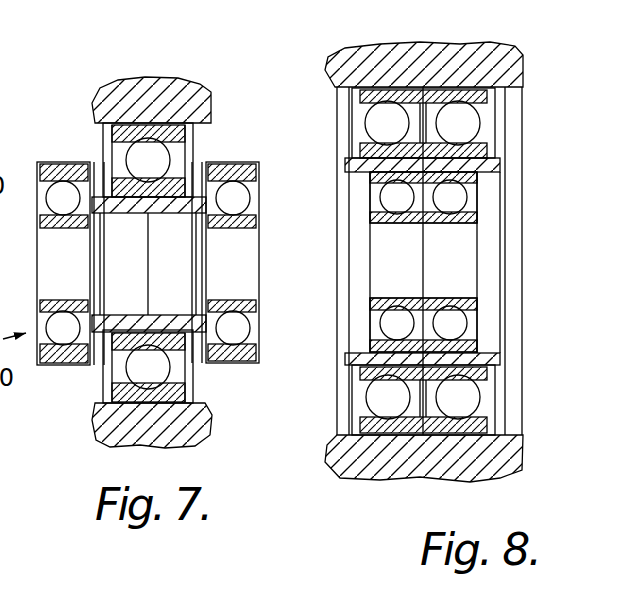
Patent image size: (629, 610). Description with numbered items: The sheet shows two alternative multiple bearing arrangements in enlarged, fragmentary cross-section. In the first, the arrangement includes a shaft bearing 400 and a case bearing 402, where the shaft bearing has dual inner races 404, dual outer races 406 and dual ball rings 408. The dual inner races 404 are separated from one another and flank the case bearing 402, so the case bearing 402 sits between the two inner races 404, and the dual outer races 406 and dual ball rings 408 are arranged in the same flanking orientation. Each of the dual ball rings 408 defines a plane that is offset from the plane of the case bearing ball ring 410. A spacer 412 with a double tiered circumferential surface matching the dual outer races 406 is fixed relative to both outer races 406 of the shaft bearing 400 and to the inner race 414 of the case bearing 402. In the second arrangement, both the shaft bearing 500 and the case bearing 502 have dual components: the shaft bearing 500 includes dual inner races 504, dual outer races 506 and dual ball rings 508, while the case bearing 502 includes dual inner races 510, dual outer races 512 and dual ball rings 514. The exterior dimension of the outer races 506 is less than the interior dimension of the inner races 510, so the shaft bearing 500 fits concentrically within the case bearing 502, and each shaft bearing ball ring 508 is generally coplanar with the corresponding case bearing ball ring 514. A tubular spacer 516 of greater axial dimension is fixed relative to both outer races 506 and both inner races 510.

In FIG. 7, the shaft bearing 400 is at (268, 191).
In FIG. 7, the case bearing 402 is at (106, 141).
In FIG. 7, the dual inner races 404 is at (83, 222).
In FIG. 7, the dual outer races 406 is at (52, 347).
In FIG. 7, the dual ball rings 408 is at (213, 322).
In FIG. 7, the case bearing ball ring 410 is at (120, 378).
In FIG. 7, the spacer 412 is at (197, 170).
In FIG. 7, the inner race 414 is at (182, 352).
In FIG. 8, the shaft bearing 500 is at (364, 328).
In FIG. 8, the case bearing 502 is at (345, 413).
In FIG. 8, the dual inner races 504 is at (400, 300).
In FIG. 8, the dual outer races 506 is at (430, 178).
In FIG. 8, the dual ball rings 508 is at (377, 317).
In FIG. 8, the dual inner races 510 is at (440, 153).
In FIG. 8, the dual outer races 512 is at (372, 428).
In FIG. 8, the dual ball rings 514 is at (490, 392).
In FIG. 8, the spacer 516 is at (355, 358).